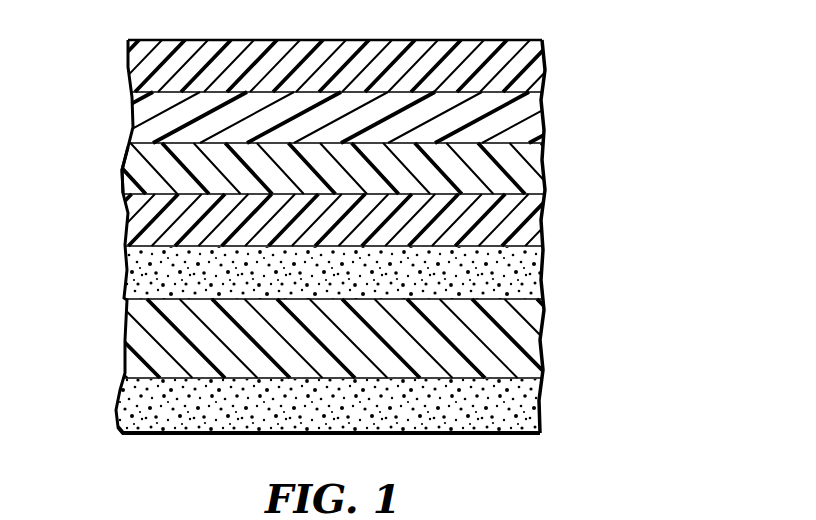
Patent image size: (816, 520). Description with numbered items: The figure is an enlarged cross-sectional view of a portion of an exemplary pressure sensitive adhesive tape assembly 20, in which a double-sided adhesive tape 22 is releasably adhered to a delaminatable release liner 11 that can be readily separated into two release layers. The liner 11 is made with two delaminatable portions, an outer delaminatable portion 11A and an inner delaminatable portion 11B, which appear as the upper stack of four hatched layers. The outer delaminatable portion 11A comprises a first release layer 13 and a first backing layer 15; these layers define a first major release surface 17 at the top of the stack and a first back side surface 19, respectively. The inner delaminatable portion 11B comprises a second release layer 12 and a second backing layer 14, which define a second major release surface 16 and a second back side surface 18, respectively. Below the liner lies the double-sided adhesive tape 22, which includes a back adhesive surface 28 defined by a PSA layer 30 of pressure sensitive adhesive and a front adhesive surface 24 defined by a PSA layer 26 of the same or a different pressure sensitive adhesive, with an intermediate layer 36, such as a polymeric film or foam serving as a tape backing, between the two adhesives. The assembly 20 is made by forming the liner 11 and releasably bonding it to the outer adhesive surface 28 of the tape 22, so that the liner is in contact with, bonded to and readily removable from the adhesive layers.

The adhesive tape assembly 20 is at (650, 286).
The delaminatable release liner 11 is at (632, 42).
The outer delaminatable portion 11A is at (560, 40).
The inner delaminatable portion 11B is at (560, 145).
The first release layer 13 is at (157, 63).
The first major release surface 17 is at (180, 40).
The first backing layer 15 is at (163, 105).
The second back side surface 18 is at (178, 138).
The second backing layer 14 is at (143, 172).
The first back side surface 19 is at (132, 155).
The second release layer 12 is at (158, 222).
The back adhesive surface 28 is at (155, 214).
The double-sided adhesive tape 22 is at (108, 245).
The second major release surface 16 is at (513, 252).
The PSA layer 30 is at (507, 280).
The intermediate layer 36 is at (517, 335).
The PSA layer 26 is at (523, 398).
The front adhesive surface 24 is at (500, 422).